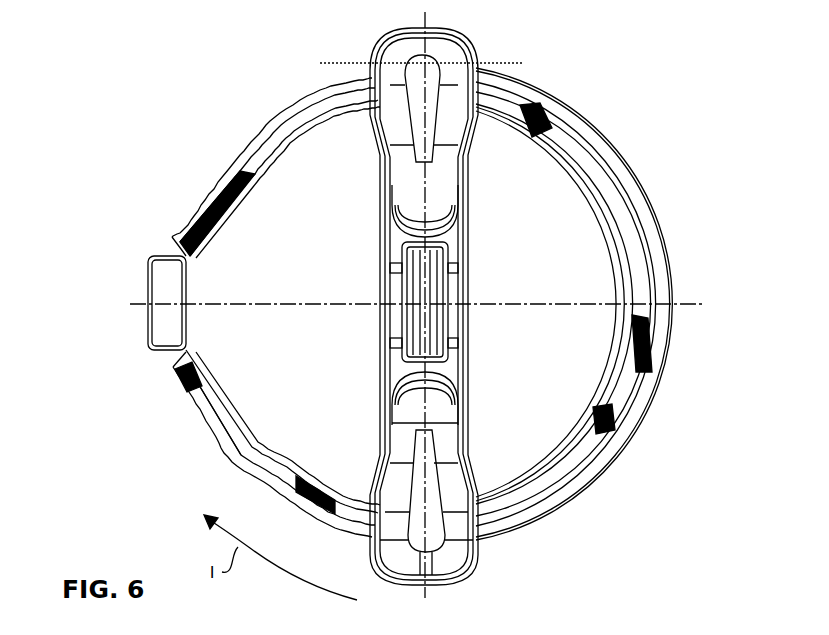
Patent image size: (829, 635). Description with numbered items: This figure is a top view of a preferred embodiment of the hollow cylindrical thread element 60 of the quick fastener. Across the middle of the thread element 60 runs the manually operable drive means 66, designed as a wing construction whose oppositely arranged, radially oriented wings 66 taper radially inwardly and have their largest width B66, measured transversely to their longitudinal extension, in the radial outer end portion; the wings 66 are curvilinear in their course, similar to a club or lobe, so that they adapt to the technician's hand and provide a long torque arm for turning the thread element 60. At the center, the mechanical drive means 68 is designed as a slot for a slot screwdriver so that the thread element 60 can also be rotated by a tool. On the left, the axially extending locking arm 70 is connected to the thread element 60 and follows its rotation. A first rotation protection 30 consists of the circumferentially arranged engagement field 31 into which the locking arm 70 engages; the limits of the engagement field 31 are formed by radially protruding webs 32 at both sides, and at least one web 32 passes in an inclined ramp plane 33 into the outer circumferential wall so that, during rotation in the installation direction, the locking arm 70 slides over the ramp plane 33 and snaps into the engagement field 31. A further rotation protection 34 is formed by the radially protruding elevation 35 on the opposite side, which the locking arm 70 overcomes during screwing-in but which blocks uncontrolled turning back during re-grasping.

The first rotation protection 30 is at (176, 250).
The engagement field 31 is at (176, 363).
The webs 32 is at (178, 240).
The inclined ramp plane 33 is at (173, 378).
The further rotation protection 34 is at (681, 300).
The elevation 35 is at (672, 337).
The hollow cylindrical thread element 60 is at (547, 216).
The manually operable drive means 66 is at (437, 538).
The mechanical drive means 68 is at (427, 325).
The axial locking arm 70 is at (140, 283).
The largest width of the wings B66 is at (511, 63).